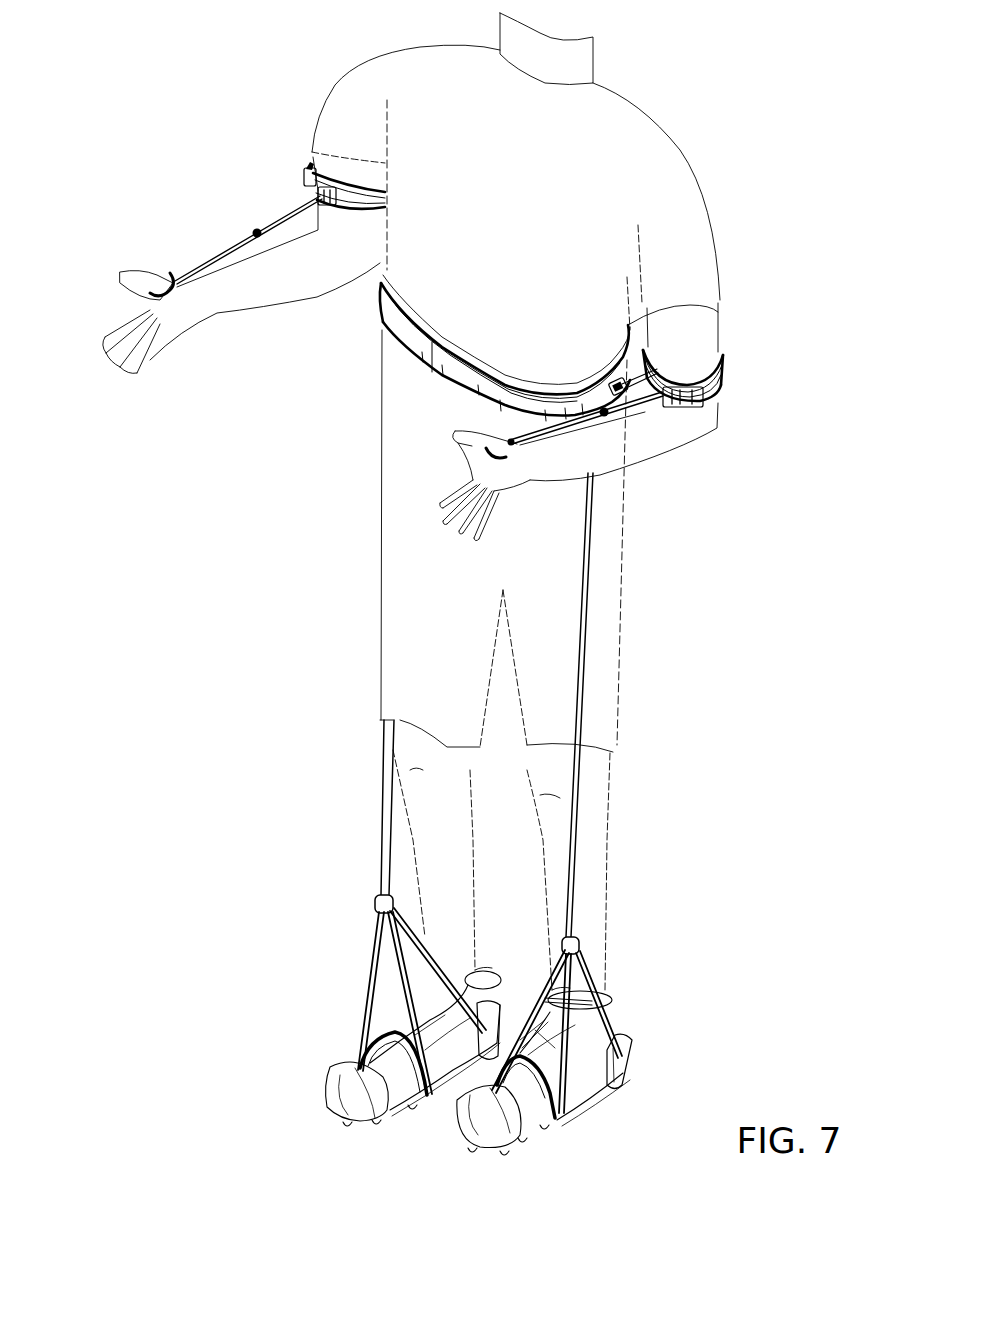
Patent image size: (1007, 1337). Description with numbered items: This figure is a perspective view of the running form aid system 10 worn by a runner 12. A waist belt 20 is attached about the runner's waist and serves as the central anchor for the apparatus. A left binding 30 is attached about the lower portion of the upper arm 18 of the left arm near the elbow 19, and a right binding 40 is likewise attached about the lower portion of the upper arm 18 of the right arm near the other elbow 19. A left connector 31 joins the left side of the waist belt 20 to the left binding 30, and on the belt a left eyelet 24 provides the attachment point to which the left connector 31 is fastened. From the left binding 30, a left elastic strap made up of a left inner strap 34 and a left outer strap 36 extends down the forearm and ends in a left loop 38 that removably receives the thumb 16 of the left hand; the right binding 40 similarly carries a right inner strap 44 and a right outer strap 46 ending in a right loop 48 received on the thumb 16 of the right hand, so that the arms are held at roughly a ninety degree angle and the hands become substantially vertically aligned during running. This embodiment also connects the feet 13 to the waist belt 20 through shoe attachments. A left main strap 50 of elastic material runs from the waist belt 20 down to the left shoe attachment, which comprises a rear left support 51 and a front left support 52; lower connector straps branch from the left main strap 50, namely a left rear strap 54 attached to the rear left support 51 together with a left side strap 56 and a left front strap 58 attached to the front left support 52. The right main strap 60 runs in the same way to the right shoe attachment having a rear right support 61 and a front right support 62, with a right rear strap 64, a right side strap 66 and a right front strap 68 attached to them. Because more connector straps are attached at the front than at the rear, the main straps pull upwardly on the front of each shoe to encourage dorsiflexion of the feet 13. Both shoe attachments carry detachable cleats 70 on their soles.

The running form aid system 10 is at (167, 130).
The runner 12 is at (640, 110).
The feet 13 is at (447, 1087).
The thumb 16 is at (122, 270).
The upper arm 18 is at (312, 163).
The elbow 19 is at (380, 268).
The waist belt 20 is at (453, 388).
The left eyelet 24 is at (637, 407).
The left binding 30 is at (735, 370).
The left connector 31 is at (640, 353).
The left inner strap 34 is at (650, 401).
The left outer strap 36 is at (596, 413).
The left loop 38 is at (502, 447).
The right binding 40 is at (297, 170).
The right inner strap 44 is at (270, 220).
The right outer strap 46 is at (207, 262).
The right loop 48 is at (170, 290).
The left main strap 50 is at (583, 705).
The rear left support 51 is at (630, 1046).
The front left support 52 is at (560, 1137).
The left rear strap 54 is at (587, 977).
The left side strap 56 is at (580, 1103).
The left front strap 58 is at (592, 1003).
The right main strap 60 is at (382, 802).
The rear right support 61 is at (510, 1002).
The front right support 62 is at (327, 1090).
The right rear strap 64 is at (395, 918).
The right side strap 66 is at (395, 963).
The right front strap 68 is at (368, 1042).
The cleats 70 is at (337, 1125).